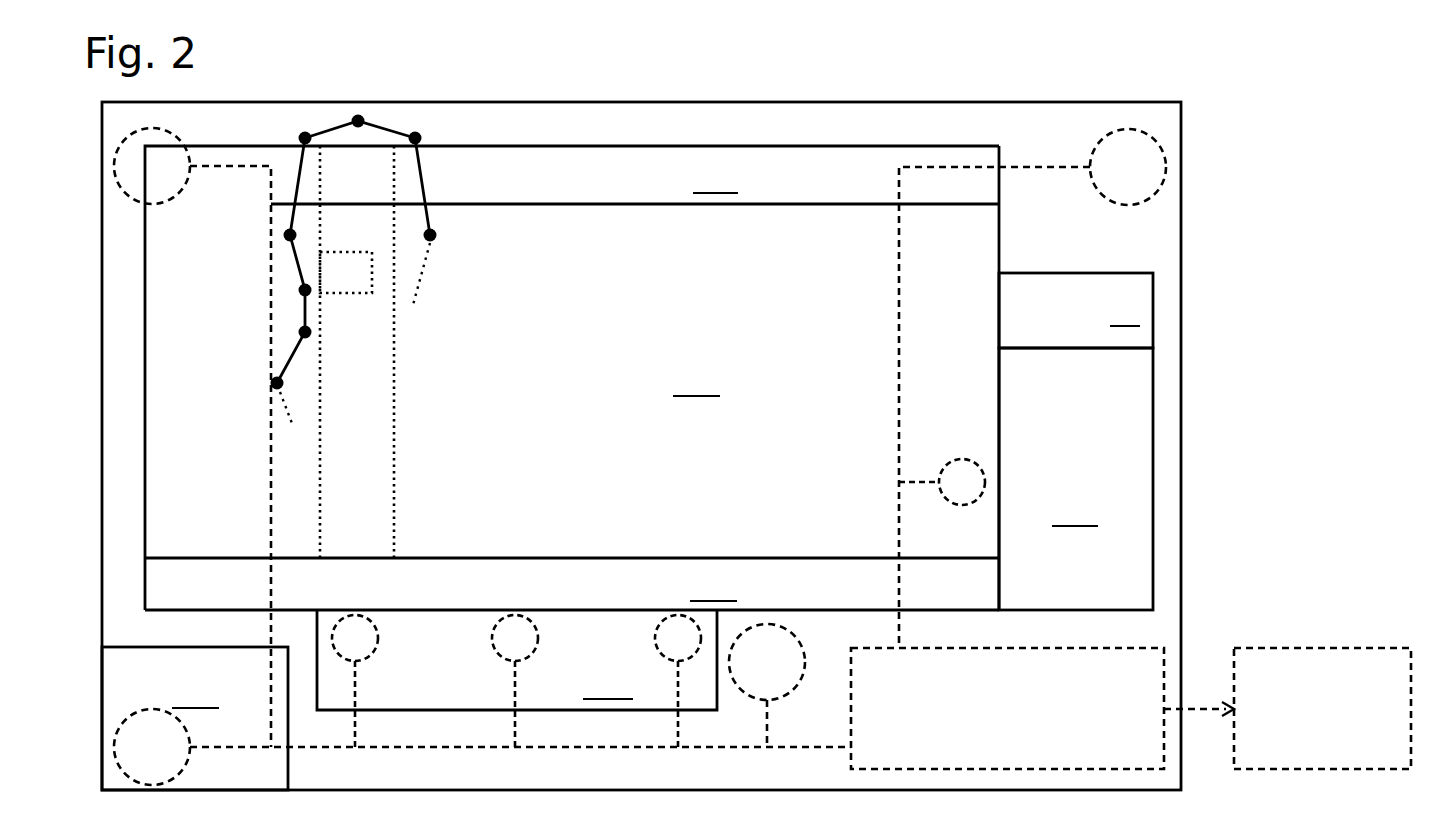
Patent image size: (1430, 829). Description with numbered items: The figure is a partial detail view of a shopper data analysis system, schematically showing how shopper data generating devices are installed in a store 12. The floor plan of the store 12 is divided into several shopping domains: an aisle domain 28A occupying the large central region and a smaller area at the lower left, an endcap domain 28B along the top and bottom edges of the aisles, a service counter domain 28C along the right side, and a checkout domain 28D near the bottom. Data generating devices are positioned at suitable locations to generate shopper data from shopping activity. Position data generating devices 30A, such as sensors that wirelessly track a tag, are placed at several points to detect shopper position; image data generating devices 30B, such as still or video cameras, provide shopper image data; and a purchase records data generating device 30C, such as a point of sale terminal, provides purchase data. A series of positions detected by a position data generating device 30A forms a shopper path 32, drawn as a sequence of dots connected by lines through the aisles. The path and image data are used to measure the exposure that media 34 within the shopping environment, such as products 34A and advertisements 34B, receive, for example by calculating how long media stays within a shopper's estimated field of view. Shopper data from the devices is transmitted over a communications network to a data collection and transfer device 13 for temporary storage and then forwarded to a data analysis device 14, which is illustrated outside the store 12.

The store 12 is at (1128, 102).
The data collection and transfer device 13 is at (1123, 648).
The data analysis device 14 is at (1372, 648).
The aisle domain 28A is at (550, 468).
The endcap domain 28B is at (572, 378).
The service counter domain 28C is at (1076, 479).
The checkout domain 28D is at (517, 660).
The position data generating device 30A is at (178, 139).
The image data generating device 30B is at (958, 459).
The purchase records data generating device 30C is at (797, 641).
The shopper path 32 is at (380, 135).
The media 34 is at (1076, 310).
The products 34A is at (338, 296).
The advertisements 34B is at (397, 190).